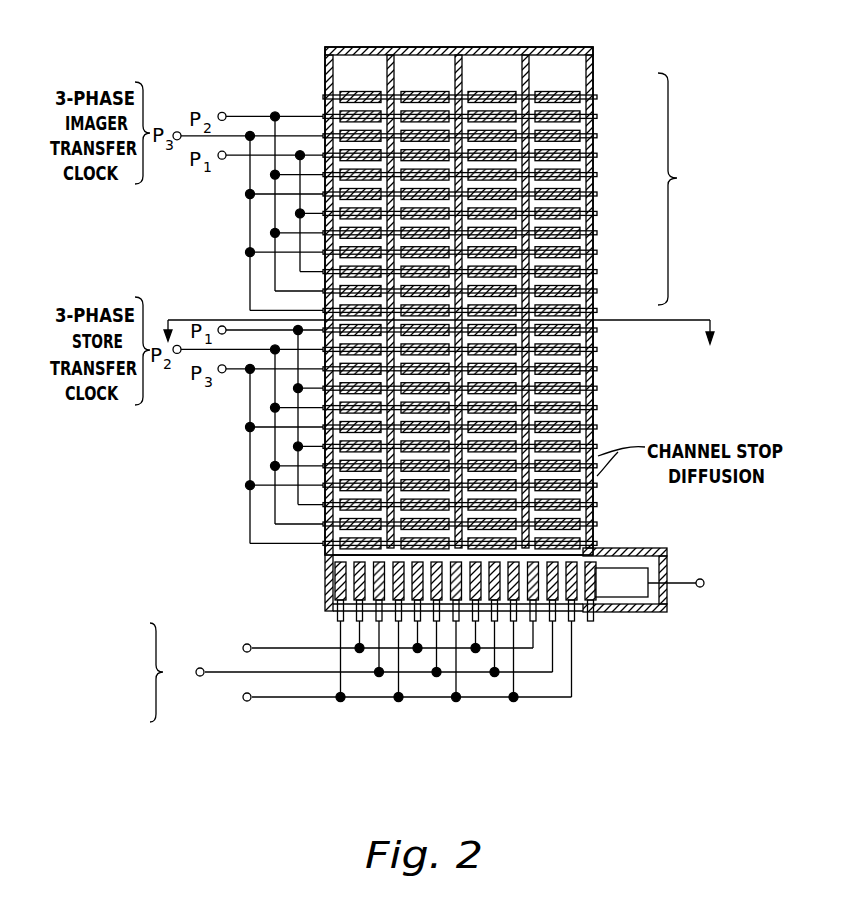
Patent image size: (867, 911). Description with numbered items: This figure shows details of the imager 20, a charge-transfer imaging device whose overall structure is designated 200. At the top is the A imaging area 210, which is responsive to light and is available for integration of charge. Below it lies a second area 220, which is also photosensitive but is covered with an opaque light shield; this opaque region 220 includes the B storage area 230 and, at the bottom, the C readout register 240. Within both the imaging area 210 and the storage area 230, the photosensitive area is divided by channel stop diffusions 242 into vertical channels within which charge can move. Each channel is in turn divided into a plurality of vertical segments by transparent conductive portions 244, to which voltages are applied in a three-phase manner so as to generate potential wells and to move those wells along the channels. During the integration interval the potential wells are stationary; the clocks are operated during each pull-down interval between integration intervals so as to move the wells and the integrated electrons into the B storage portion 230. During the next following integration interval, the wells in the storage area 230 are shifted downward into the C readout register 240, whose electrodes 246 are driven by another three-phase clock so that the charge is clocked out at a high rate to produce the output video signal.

The CCD imager 200 is at (630, 34).
The imager 20 is at (772, 257).
The channel stop diffusion 242 is at (593, 84).
The transparent conductive portion 244 is at (600, 110).
The A imaging area 210 is at (539, 194).
The second area 220 is at (808, 417).
The B storage area 230 is at (650, 528).
The C readout register 240 is at (415, 635).
The readout register electrode 246 is at (340, 622).